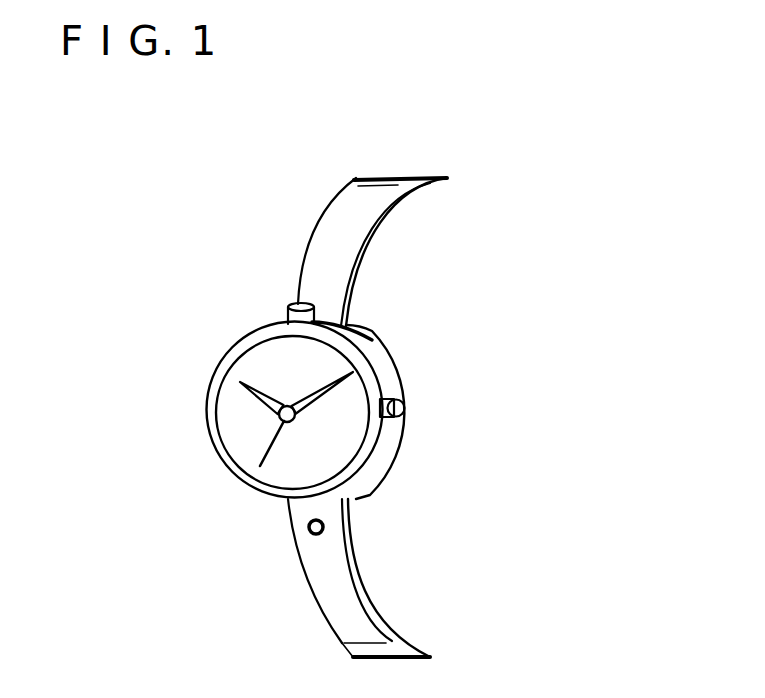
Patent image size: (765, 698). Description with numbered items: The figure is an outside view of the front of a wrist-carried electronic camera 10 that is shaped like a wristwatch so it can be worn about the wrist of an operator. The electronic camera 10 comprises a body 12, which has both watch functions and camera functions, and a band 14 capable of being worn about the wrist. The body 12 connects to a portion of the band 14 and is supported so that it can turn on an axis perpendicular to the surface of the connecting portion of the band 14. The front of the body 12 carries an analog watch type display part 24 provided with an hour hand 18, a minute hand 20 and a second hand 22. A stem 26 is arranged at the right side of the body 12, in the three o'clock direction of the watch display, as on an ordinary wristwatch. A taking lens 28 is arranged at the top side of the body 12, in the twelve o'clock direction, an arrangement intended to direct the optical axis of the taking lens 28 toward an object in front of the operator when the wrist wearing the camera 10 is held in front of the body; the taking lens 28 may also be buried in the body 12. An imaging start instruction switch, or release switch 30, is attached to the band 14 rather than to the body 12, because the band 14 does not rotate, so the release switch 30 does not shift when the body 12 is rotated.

The wrist-carried electronic camera 10 is at (256, 216).
The body 12 is at (385, 365).
The band 14 is at (318, 595).
The hour hand 18 is at (262, 390).
The minute hand 20 is at (320, 405).
The second hand 22 is at (260, 453).
The display part 24 is at (230, 432).
The stem 26 is at (403, 407).
The taking lens 28 is at (298, 303).
The release switch 30 is at (322, 527).